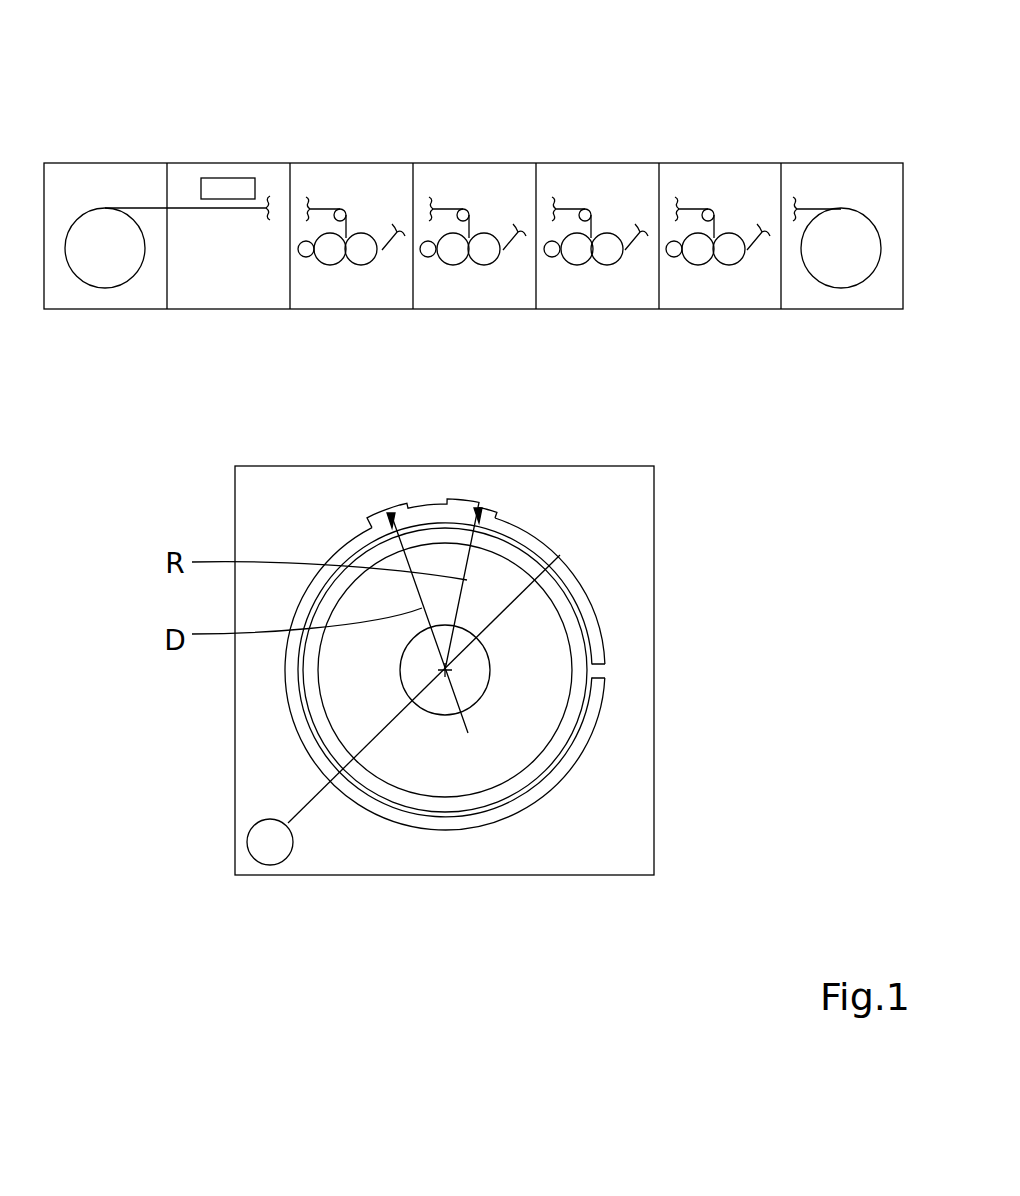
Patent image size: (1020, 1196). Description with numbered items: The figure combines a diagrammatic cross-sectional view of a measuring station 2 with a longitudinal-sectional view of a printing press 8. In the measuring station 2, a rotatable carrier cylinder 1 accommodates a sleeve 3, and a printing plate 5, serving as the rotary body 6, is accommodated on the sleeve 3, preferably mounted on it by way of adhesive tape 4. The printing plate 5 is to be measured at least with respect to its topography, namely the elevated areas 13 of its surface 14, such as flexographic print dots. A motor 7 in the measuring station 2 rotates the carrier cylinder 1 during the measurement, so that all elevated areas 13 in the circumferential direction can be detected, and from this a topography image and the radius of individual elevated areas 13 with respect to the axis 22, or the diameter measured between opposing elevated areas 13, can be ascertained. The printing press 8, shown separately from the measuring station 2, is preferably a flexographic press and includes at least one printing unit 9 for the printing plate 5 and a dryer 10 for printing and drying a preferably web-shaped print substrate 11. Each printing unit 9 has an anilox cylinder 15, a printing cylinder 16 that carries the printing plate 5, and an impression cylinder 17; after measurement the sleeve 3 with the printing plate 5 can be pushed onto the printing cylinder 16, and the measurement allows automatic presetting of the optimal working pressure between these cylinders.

The carrier cylinder 1 is at (440, 780).
The measuring station 2 is at (540, 875).
The sleeve 3 is at (396, 790).
The adhesive tape 4 is at (463, 815).
The printing plate 5 is at (517, 674).
The rotary body 6 is at (594, 610).
The motor 7 is at (247, 843).
The printing press 8 is at (855, 100).
The printing unit 9 is at (489, 190).
The dryer 10 is at (236, 190).
The print substrate 11 is at (149, 208).
The elevated areas 13 is at (463, 500).
The surface 14 is at (545, 540).
The anilox cylinder 15 is at (307, 258).
The printing cylinder 16 is at (331, 265).
The impression cylinder 17 is at (362, 265).
The axis 22 is at (566, 568).